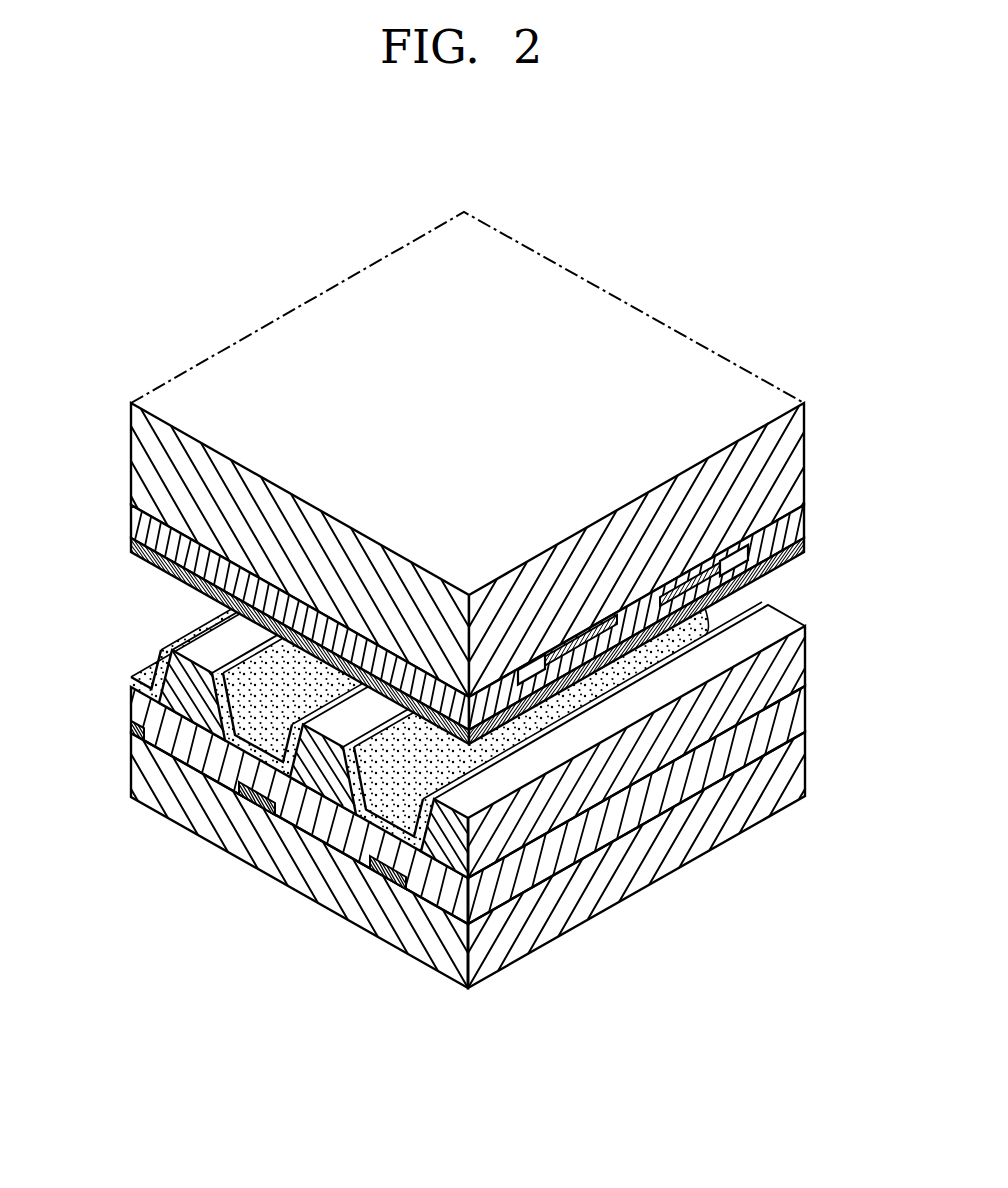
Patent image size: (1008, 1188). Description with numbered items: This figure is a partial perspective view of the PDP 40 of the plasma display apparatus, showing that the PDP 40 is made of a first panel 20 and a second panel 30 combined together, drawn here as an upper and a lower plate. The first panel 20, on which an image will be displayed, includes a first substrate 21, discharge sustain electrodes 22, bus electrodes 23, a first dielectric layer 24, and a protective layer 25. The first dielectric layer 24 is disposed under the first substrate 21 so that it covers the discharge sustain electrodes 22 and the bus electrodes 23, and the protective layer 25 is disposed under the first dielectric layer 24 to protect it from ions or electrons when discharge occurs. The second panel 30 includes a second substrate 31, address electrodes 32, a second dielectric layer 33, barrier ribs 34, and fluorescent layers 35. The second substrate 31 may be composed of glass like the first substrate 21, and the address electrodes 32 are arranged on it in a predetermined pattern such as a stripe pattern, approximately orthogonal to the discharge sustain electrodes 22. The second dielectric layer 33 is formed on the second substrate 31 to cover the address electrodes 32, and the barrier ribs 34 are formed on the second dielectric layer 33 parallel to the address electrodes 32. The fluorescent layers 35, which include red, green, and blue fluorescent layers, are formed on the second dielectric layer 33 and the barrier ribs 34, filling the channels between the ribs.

The first panel 20 is at (122, 385).
The first substrate 21 is at (148, 456).
The discharge sustain electrodes 22 is at (590, 626).
The bus electrodes 23 is at (528, 668).
The first dielectric layer 24 is at (140, 528).
The protective layer 25 is at (136, 553).
The second panel 30 is at (122, 835).
The second substrate 31 is at (800, 772).
The address electrodes 32 is at (250, 803).
The second dielectric layer 33 is at (800, 728).
The barrier ribs 34 is at (330, 790).
The fluorescent layers 35 is at (392, 808).
The PDP 40 is at (692, 926).